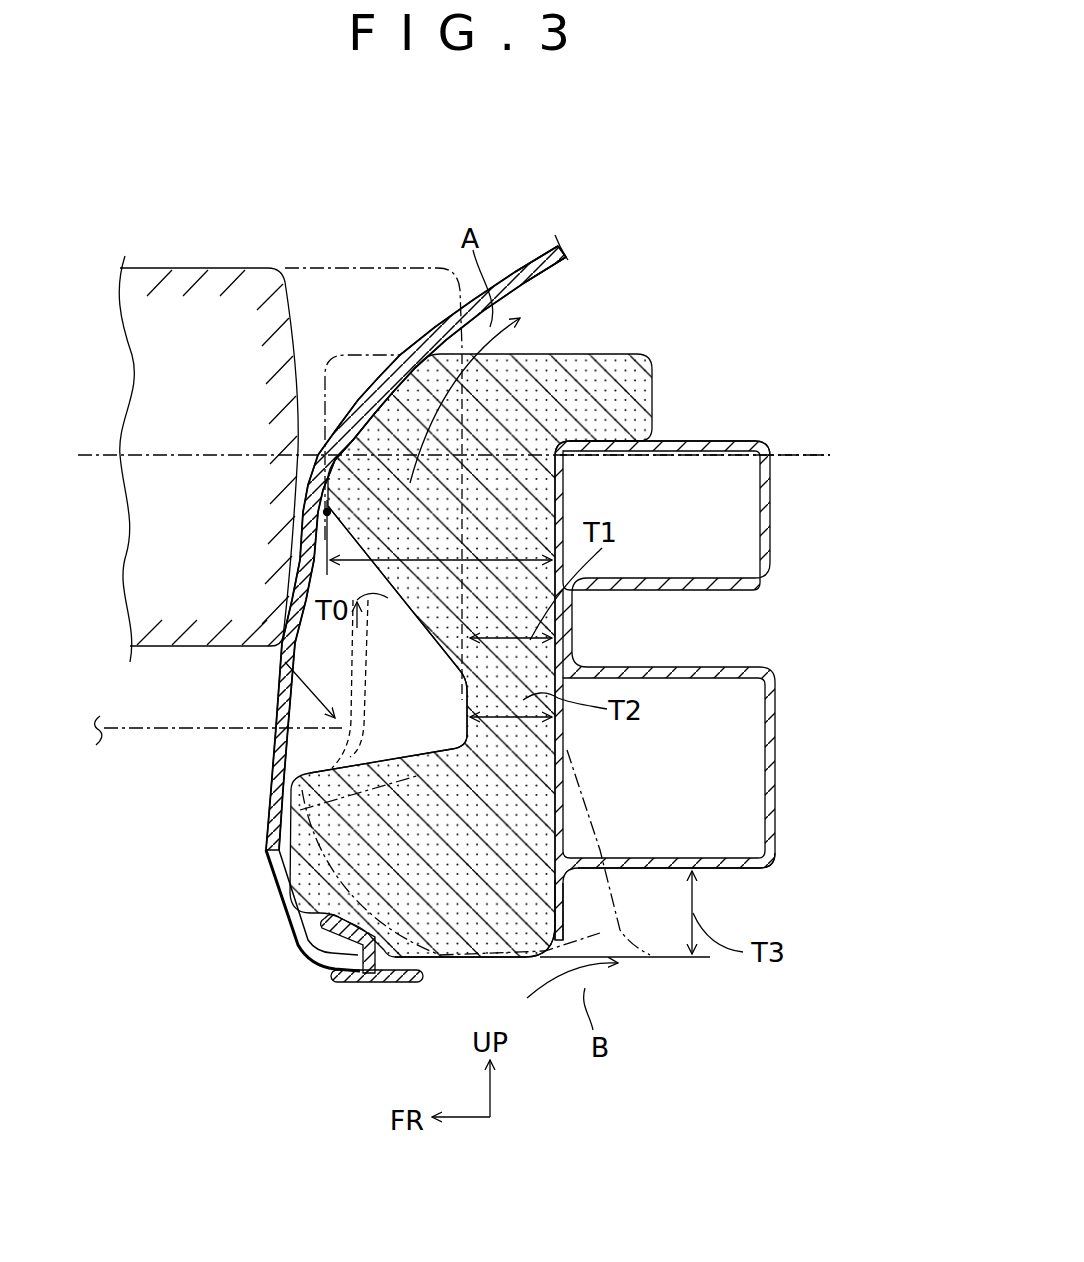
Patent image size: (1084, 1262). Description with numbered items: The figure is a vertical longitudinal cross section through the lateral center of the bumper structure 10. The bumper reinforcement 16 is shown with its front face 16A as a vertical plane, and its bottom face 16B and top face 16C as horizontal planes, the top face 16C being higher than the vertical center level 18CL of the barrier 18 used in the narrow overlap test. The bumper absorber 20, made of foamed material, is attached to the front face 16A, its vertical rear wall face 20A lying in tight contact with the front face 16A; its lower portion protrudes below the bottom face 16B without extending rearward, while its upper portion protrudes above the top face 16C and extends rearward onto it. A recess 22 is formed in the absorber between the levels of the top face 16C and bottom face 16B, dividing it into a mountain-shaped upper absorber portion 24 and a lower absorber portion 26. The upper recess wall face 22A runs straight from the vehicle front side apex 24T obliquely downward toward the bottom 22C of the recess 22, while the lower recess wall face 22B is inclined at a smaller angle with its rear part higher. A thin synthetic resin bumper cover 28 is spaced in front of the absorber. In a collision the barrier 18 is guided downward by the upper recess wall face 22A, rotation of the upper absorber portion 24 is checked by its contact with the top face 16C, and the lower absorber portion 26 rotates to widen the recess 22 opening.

The bumper structure 10 is at (651, 235).
The bumper reinforcement 16 is at (762, 442).
The front face of the bumper reinforcement 16A is at (562, 873).
The bottom face of the bumper reinforcement 16B is at (722, 870).
The top face of the bumper reinforcement 16C is at (700, 440).
The barrier 18 is at (327, 262).
The vertical center level of the barrier 18CL is at (820, 457).
The bumper absorber 20 is at (558, 349).
The rear wall face of the bumper absorber 20A is at (527, 917).
The recess 22 is at (467, 701).
The upper recess wall face 22A is at (428, 617).
The lower recess wall face 22B is at (356, 734).
The bottom of the recess 22C is at (466, 719).
The upper absorber portion 24 is at (368, 397).
The vehicle front side apex 24T is at (323, 513).
The lower absorber portion 26 is at (290, 897).
The bumper cover 28 is at (533, 258).